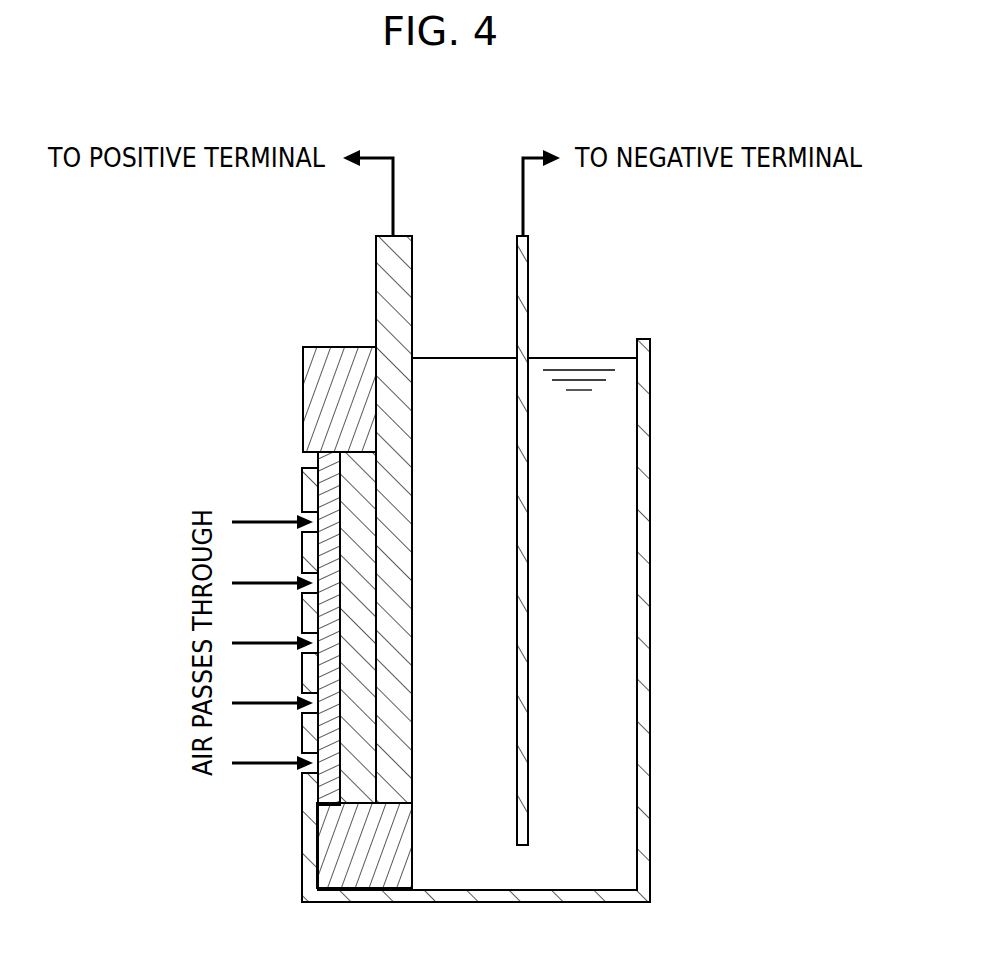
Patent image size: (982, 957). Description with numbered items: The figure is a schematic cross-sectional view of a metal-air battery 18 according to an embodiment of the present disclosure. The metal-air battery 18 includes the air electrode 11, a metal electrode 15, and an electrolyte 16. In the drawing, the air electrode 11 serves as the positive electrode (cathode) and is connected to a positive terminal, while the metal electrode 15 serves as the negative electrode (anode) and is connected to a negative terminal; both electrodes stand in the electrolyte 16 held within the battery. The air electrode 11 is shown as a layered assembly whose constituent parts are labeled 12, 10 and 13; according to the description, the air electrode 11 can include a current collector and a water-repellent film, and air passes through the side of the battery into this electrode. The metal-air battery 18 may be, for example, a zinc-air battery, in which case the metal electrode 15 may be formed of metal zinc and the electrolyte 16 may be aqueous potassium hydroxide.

The metal-air battery 18 is at (692, 306).
The air electrode 11 is at (195, 332).
The positive electrode current collector 12 is at (392, 410).
The air electrode catalyst layer 10 is at (362, 470).
The water-repellent / gas diffusion layer 13 is at (332, 473).
The metal electrode 15 is at (527, 572).
The electrolyte 16 is at (577, 760).